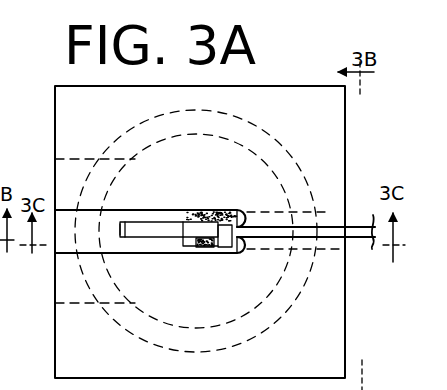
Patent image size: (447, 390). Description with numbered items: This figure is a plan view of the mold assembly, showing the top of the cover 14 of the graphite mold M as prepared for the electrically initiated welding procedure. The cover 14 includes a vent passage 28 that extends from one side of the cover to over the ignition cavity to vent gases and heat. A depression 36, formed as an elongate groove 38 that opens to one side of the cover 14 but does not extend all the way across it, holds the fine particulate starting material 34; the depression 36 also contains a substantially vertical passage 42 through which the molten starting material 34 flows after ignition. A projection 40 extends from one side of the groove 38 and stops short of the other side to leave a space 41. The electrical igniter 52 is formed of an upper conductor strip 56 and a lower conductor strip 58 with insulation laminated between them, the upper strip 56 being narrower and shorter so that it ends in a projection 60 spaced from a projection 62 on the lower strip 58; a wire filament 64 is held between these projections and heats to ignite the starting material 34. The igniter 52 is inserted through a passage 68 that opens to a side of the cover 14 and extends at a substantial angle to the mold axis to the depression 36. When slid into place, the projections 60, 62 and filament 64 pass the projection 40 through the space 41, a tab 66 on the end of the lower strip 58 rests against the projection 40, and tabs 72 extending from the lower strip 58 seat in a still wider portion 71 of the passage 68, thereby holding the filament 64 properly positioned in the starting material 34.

The cover 14 is at (63, 120).
The vent passage 28 is at (60, 173).
The starting material 34 is at (229, 220).
The depression 36 is at (190, 211).
The elongate groove 38 is at (114, 210).
The projection 40 is at (143, 210).
The space 41 is at (141, 249).
The vertical passage 42 is at (213, 249).
The electrical igniter 52 is at (236, 212).
The upper conductor strip 56 is at (331, 226).
The lower conductor strip 58 is at (361, 250).
The projection 60 is at (228, 248).
The projection 62 is at (187, 250).
The wire filament 64 is at (203, 249).
The tab 66 is at (120, 229).
The passage 68 is at (345, 224).
The still wider portion 71 is at (263, 210).
The tabs 72 is at (262, 212).
The mold M is at (349, 313).